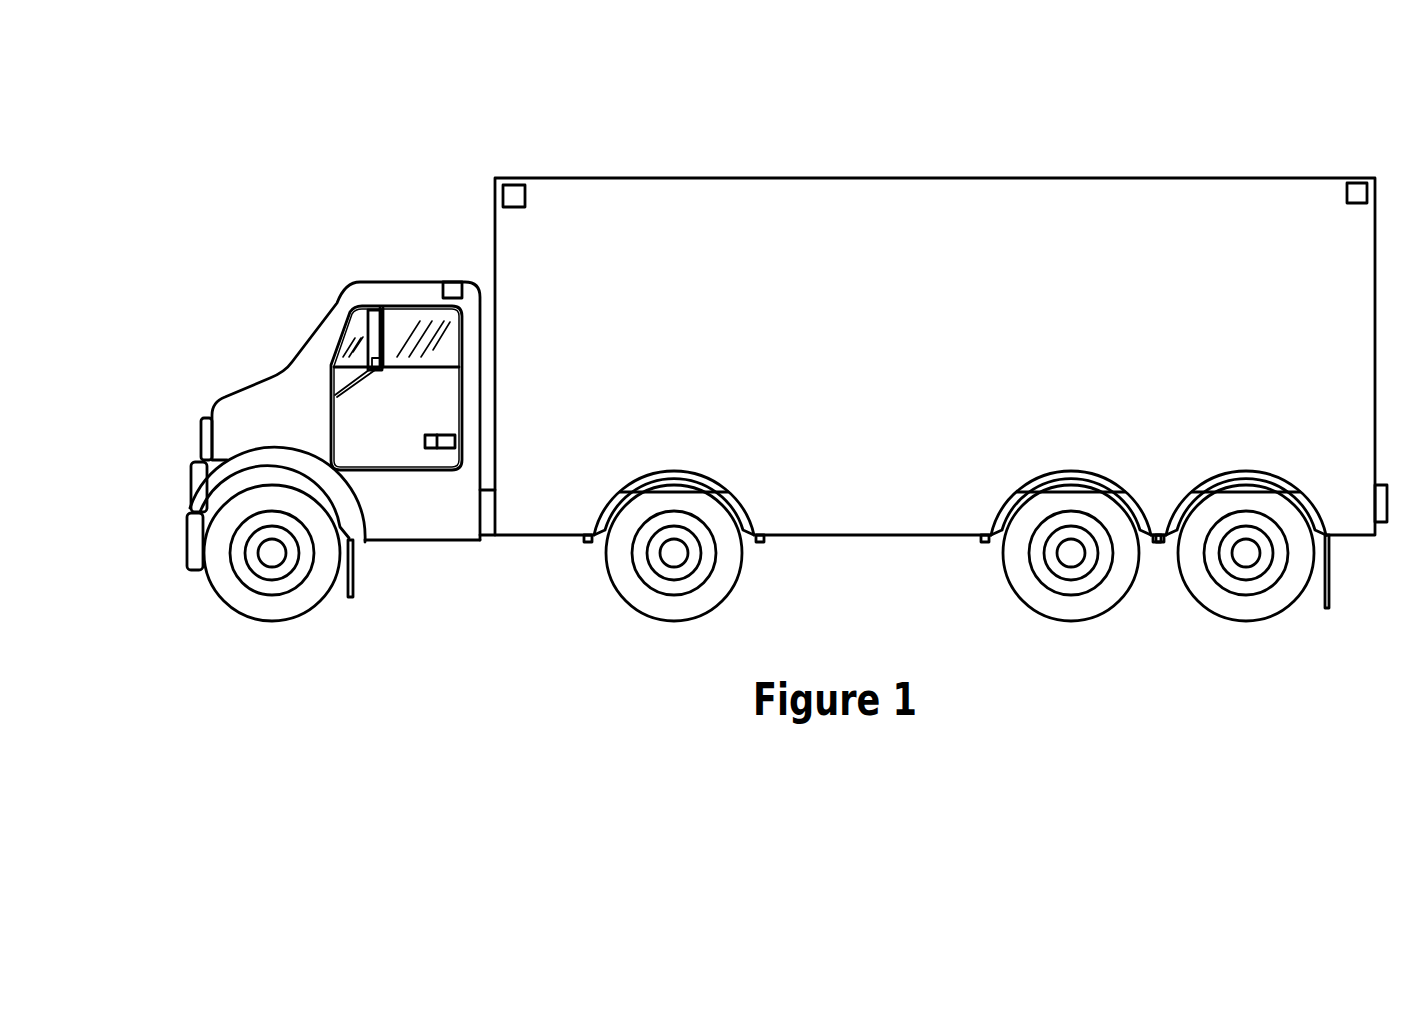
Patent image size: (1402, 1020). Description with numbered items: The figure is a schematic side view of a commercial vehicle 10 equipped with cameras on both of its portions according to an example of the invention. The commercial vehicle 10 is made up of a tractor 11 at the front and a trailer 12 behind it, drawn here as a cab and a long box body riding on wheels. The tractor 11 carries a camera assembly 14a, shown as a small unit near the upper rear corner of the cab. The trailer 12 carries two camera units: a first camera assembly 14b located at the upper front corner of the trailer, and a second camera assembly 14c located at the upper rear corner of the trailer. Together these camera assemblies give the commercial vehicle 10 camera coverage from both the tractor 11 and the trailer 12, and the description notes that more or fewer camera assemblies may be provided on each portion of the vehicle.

The commercial vehicle 10 is at (730, 75).
The tractor 11 is at (390, 282).
The trailer 12 is at (706, 178).
The camera assembly 14a is at (455, 283).
The first camera assembly 14b is at (517, 185).
The second camera assembly 14c is at (1358, 190).